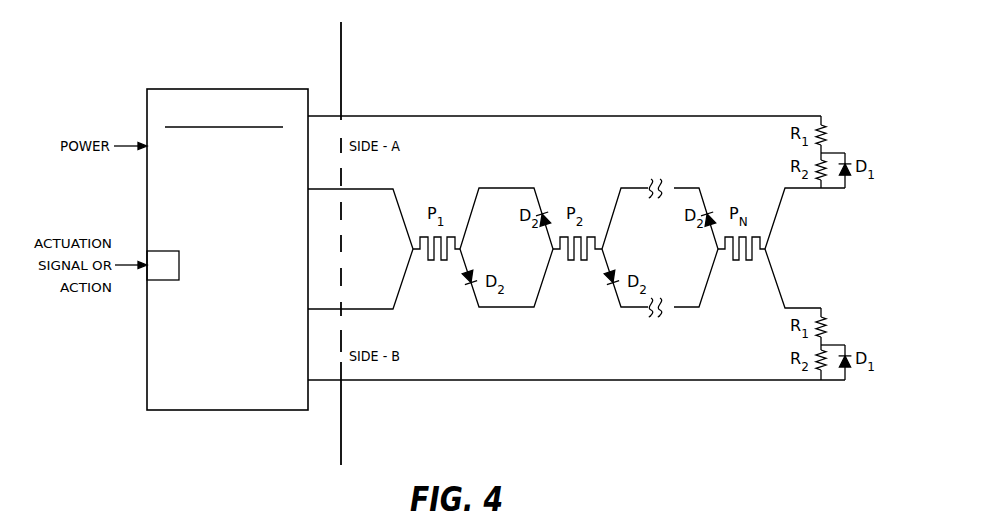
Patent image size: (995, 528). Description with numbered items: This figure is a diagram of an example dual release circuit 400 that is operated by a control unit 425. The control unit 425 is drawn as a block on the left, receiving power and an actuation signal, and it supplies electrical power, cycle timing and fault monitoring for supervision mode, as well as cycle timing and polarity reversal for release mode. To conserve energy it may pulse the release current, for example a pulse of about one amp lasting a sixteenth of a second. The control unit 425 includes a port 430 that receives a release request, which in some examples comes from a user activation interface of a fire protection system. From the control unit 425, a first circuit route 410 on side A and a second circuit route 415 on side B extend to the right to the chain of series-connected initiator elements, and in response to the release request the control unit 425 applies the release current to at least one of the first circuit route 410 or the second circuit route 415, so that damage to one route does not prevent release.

The dual release circuit 400 is at (780, 62).
The first circuit route 410 is at (350, 189).
The second circuit route 415 is at (350, 309).
The control unit 425 is at (228, 89).
The port 430 is at (181, 263).